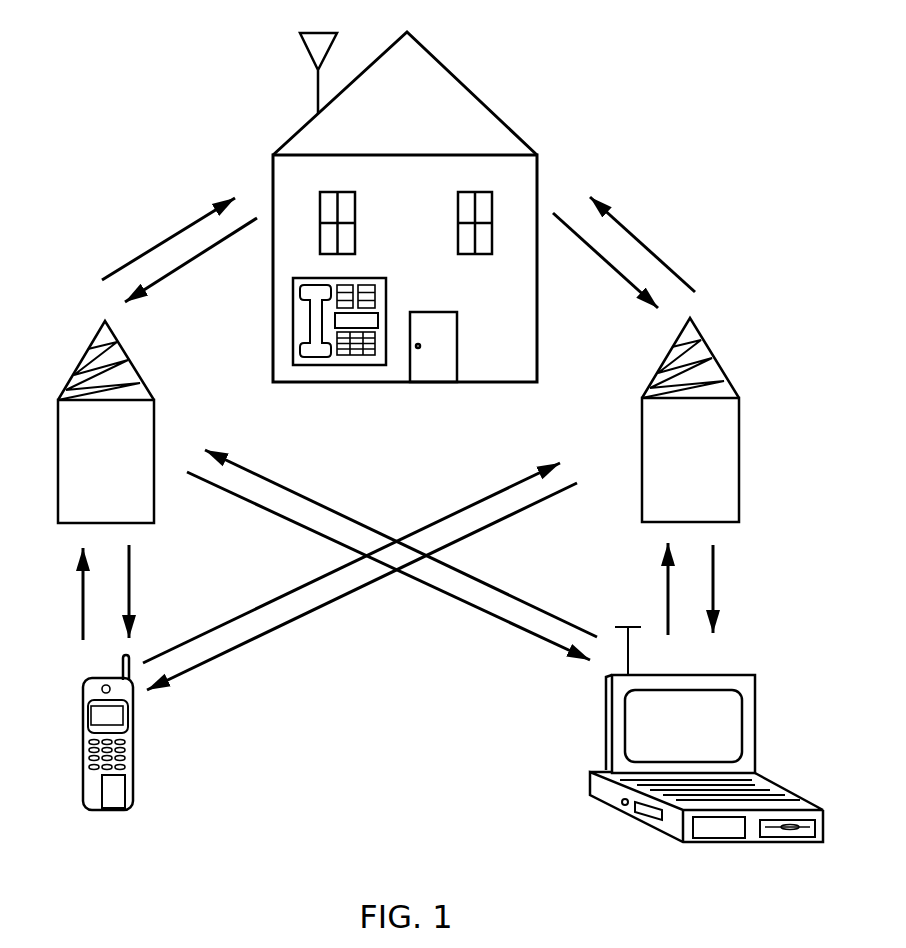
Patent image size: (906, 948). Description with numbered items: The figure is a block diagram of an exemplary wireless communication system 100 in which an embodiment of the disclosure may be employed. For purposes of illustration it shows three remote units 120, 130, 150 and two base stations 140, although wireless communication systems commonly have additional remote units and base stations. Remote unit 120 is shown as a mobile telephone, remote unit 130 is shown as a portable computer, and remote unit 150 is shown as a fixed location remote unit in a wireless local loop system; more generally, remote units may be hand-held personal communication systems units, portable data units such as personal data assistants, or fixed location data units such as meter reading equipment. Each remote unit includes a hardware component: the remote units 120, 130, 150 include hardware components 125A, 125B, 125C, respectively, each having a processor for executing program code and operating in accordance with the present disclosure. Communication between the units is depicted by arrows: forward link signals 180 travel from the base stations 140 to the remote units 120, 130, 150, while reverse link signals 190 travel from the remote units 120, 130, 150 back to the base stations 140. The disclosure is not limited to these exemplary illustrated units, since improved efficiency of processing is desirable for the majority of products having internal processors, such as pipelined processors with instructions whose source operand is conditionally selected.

The wireless communication system 100 is at (122, 75).
The remote unit 120 is at (85, 685).
The hardware component 125A is at (117, 795).
The hardware component 125B is at (367, 320).
The hardware component 125C is at (725, 827).
The remote unit 130 is at (735, 675).
The base station 140 is at (85, 360).
The remote unit 150 is at (293, 332).
The forward link signals 180 is at (172, 238).
The reverse link signals 190 is at (178, 268).